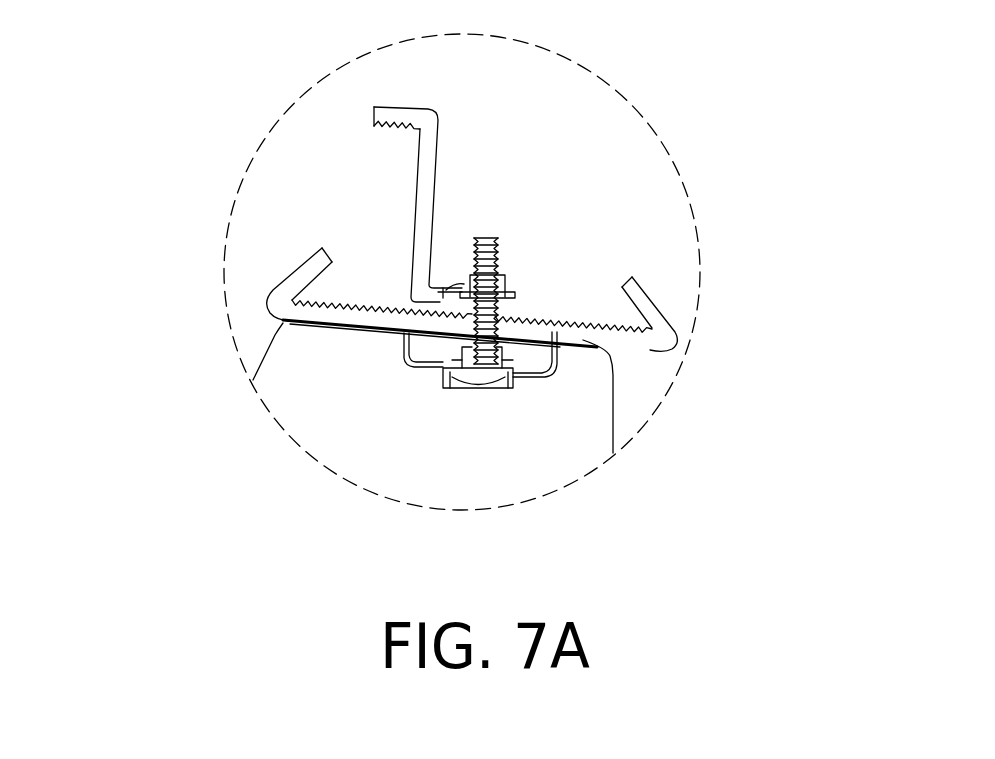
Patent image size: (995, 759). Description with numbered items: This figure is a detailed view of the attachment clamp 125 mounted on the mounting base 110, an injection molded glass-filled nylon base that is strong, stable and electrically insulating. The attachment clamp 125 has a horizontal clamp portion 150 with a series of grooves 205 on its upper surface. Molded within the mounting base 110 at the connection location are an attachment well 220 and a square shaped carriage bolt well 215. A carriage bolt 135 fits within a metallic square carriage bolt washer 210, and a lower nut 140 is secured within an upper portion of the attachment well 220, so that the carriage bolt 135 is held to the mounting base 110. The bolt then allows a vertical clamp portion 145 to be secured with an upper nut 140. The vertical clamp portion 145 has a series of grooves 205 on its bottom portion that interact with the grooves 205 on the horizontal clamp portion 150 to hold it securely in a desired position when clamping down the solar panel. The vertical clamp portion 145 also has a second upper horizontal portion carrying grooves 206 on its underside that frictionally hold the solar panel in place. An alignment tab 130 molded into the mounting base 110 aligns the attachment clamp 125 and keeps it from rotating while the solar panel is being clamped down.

The mounting base 110 is at (307, 383).
The attachment clamp 125 is at (283, 197).
The alignment tab 130 is at (450, 300).
The carriage bolt 135 is at (497, 242).
The nut 140 is at (505, 280).
The vertical clamp portion 145 is at (426, 194).
The horizontal clamp portion 150 is at (287, 281).
The grooves 205 is at (545, 341).
The grooves 206 is at (390, 133).
The carriage bolt washer 210 is at (445, 383).
The carriage bolt well 215 is at (513, 390).
The attachment well 220 is at (403, 353).